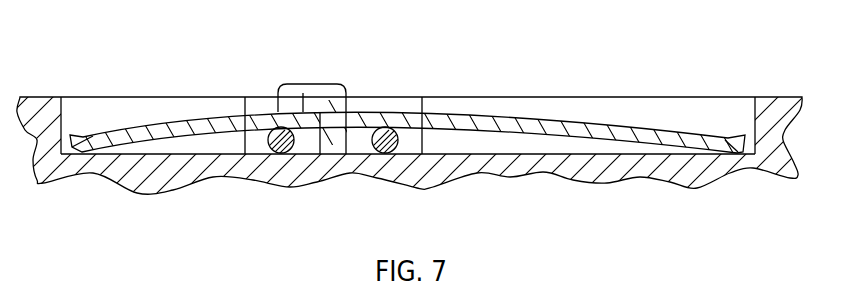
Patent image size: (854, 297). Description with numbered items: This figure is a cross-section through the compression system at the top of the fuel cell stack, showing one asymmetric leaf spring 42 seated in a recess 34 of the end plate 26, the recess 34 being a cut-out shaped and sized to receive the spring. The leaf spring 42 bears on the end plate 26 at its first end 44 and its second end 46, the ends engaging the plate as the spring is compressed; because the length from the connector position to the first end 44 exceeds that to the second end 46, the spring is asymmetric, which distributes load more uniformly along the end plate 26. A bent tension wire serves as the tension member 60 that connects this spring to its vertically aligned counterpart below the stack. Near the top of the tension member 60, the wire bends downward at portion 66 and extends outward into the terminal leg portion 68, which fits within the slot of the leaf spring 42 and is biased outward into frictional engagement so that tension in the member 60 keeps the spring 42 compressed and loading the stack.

The end plate 26 is at (770, 96).
The recess 34 is at (115, 110).
The asymmetric leaf spring 42 is at (478, 115).
The first end 44 is at (727, 136).
The second end 46 is at (80, 135).
The tension member 60 is at (405, 121).
The downward bend portion 66 is at (286, 100).
The terminal leg portion 68 is at (384, 153).